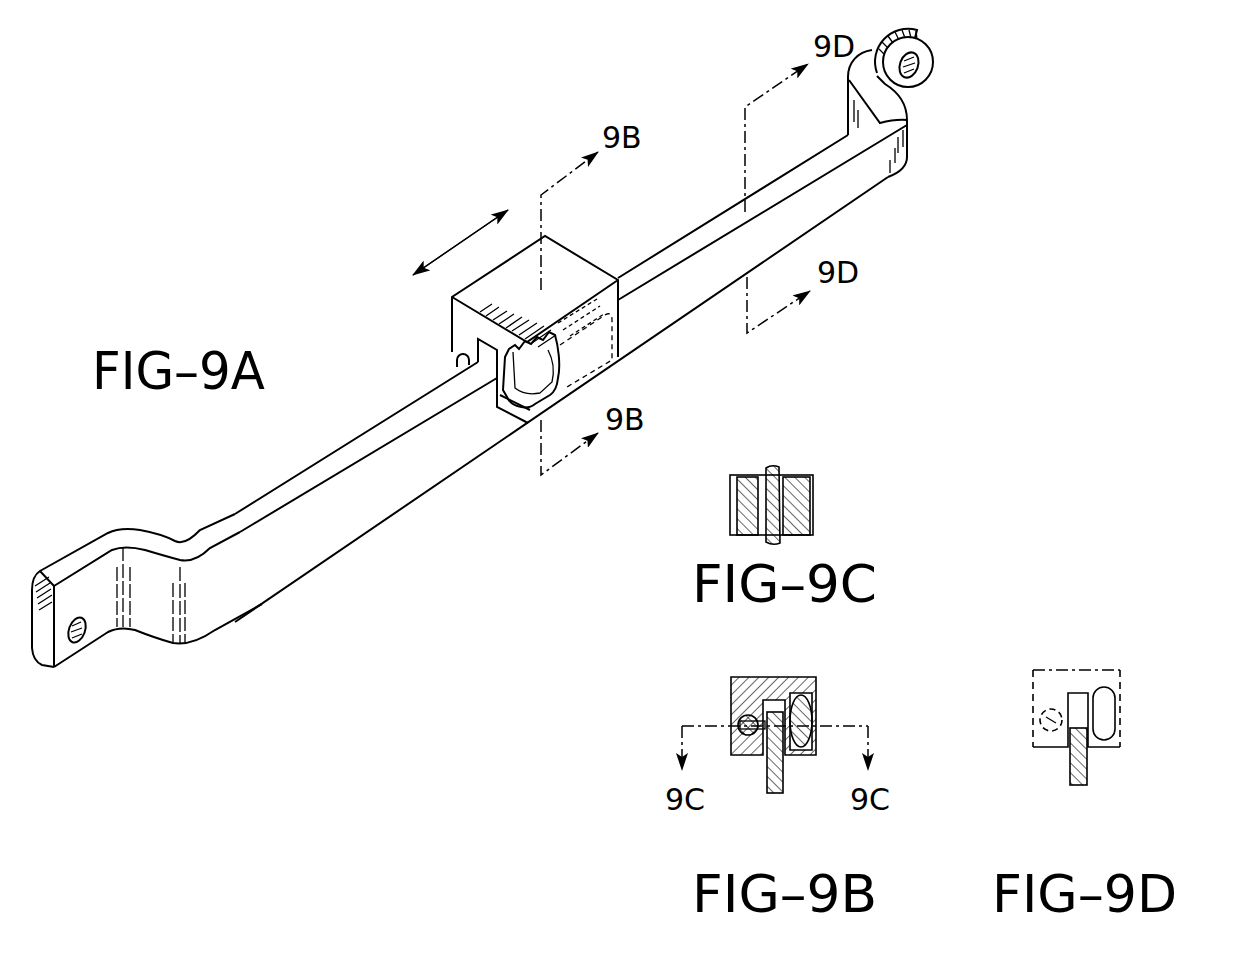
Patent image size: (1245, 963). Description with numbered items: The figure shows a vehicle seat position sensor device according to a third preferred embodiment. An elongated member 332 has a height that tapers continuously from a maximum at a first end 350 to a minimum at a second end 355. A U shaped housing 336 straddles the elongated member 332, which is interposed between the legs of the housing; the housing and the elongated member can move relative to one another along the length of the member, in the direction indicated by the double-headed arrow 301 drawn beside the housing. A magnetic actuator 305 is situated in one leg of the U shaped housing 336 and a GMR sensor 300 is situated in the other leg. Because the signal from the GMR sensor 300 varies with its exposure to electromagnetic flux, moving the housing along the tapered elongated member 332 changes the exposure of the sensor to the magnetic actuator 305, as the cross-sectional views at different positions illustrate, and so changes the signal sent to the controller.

In FIG. 9A, the GMR sensor 300 is at (515, 392).
In FIG. 9C, the GMR sensor 300 is at (799, 501).
In FIG. 9B, the GMR sensor 300 is at (809, 702).
In FIG. 9D, the GMR sensor 300 is at (1109, 697).
In FIG. 9A, the direction of sliding movement 301 is at (462, 244).
In FIG. 9A, the magnetic actuator 305 is at (457, 372).
In FIG. 9C, the magnetic actuator 305 is at (744, 499).
In FIG. 9B, the magnetic actuator 305 is at (748, 735).
In FIG. 9D, the magnetic actuator 305 is at (1049, 731).
In FIG. 9A, the elongated member 332 is at (348, 561).
In FIG. 9C, the elongated member 332 is at (781, 470).
In FIG. 9B, the elongated member 332 is at (786, 784).
In FIG. 9D, the elongated member 332 is at (1089, 779).
In FIG. 9A, the U shaped housing 336 is at (619, 358).
In FIG. 9C, the U shaped housing 336 is at (728, 516).
In FIG. 9B, the U shaped housing 336 is at (786, 676).
In FIG. 9D, the U shaped housing 336 is at (1087, 667).
In FIG. 9A, the first end 350 is at (226, 651).
In FIG. 9A, the second end 355 is at (912, 145).